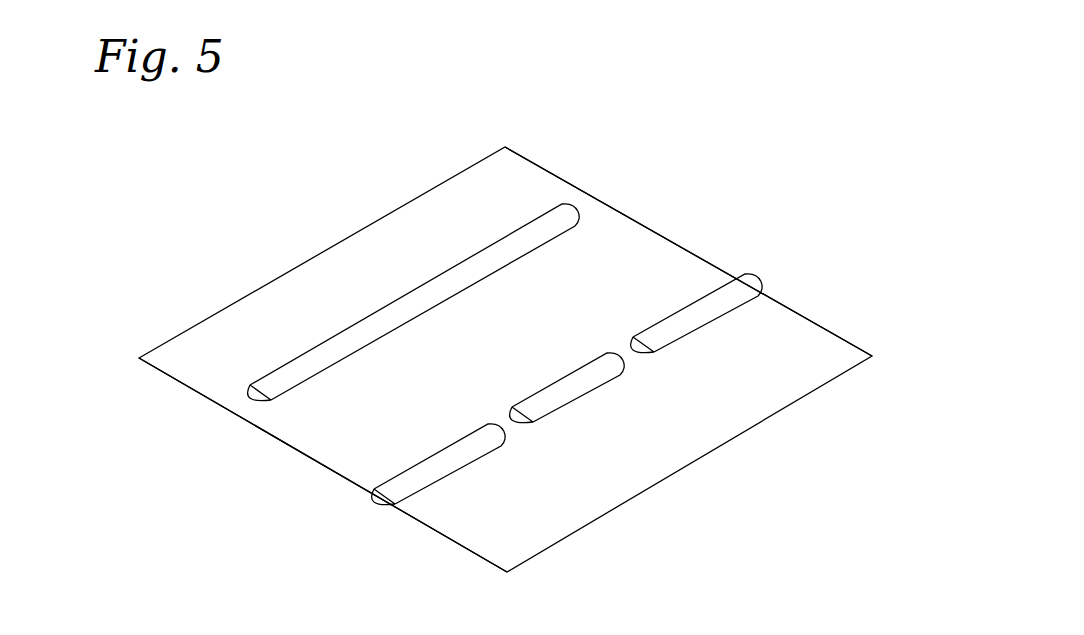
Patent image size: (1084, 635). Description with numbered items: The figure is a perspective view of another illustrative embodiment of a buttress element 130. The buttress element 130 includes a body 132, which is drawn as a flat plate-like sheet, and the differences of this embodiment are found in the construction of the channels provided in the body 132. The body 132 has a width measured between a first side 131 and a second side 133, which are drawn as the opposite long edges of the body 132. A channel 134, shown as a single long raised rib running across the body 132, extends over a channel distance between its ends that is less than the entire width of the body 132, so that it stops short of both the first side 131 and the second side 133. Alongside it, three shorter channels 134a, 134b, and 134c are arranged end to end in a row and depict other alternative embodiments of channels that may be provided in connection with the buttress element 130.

The buttress element 130 is at (361, 160).
The first side 131 is at (197, 393).
The body 132 is at (813, 348).
The second side 133 is at (552, 172).
The channel 134 is at (307, 357).
The channel 134a is at (400, 480).
The channel 134b is at (586, 373).
The channel 134c is at (729, 293).